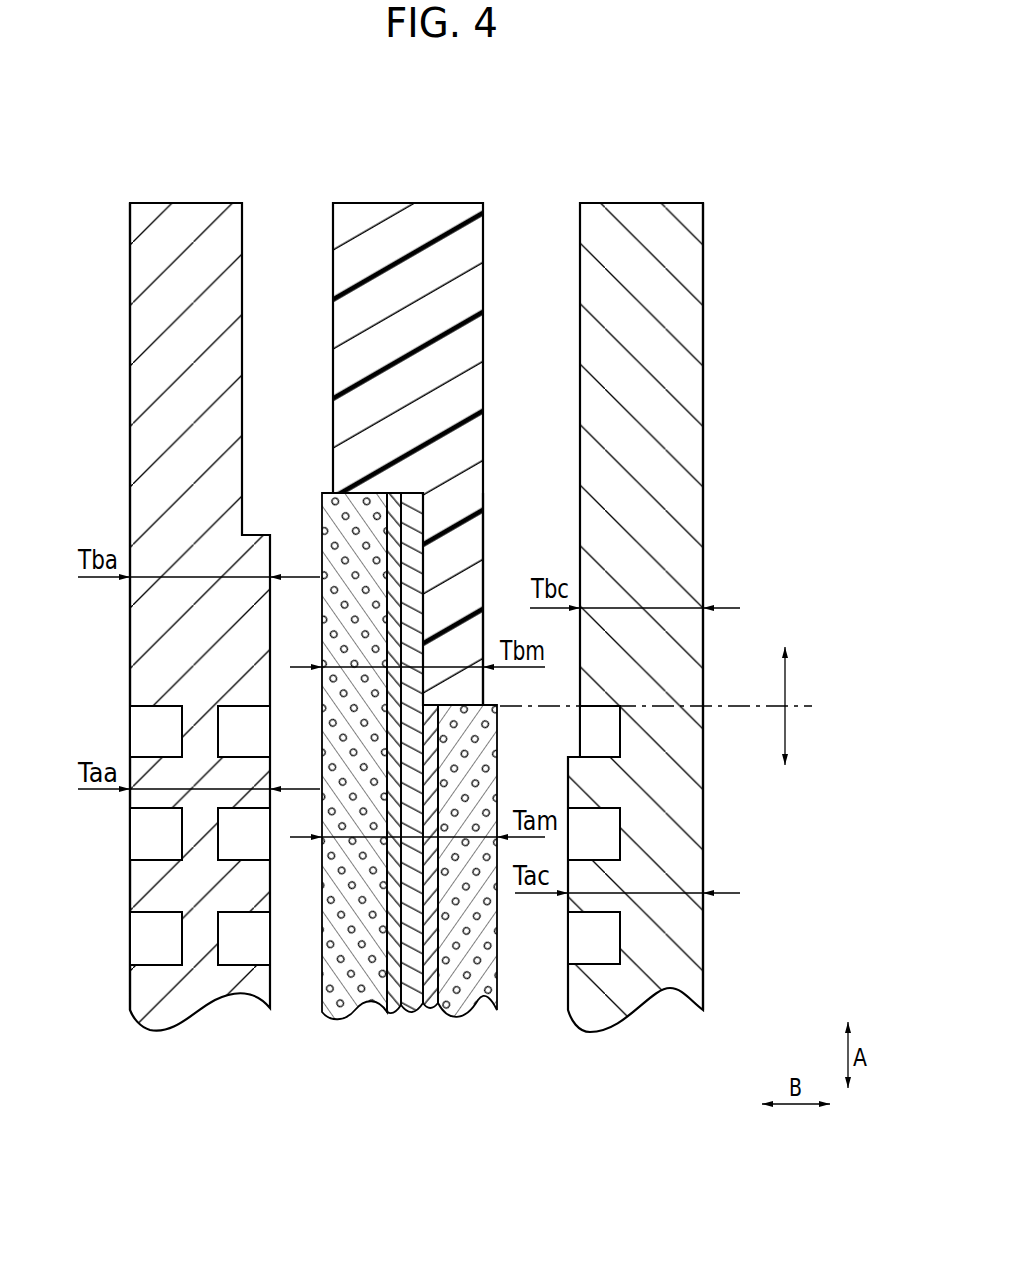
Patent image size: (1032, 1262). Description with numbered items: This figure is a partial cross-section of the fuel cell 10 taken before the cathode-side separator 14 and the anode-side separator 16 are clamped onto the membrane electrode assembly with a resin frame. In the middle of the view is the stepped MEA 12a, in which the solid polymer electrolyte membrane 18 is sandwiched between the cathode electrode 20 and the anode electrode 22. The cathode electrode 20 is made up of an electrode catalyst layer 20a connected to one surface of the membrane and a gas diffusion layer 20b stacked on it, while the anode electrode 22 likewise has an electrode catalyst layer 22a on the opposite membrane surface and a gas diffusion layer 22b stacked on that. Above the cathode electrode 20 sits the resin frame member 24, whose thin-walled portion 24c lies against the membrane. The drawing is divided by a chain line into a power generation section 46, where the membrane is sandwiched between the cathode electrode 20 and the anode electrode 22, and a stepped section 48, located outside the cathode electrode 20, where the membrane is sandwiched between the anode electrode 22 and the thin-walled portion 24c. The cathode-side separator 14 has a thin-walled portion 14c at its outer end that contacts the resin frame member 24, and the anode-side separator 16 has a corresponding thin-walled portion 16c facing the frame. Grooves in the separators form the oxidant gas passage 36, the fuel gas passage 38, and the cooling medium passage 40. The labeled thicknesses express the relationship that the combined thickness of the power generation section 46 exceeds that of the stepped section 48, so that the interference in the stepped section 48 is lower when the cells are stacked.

The fuel cell 10 is at (200, 112).
The stepped MEA 12a is at (338, 970).
The cathode-side separator 14 is at (638, 201).
The thin-walled portion 14c is at (680, 312).
The anode-side separator 16 is at (153, 201).
The thin-walled portion 16c is at (138, 281).
The solid polymer electrolyte membrane 18 is at (413, 1016).
The cathode electrode 20 is at (538, 1082).
The electrode catalyst layer 20a is at (431, 1013).
The gas diffusion layer 20b is at (471, 996).
The anode electrode 22 is at (402, 1082).
The electrode catalyst layer 22a is at (394, 1013).
The gas diffusion layer 22b is at (336, 1012).
The resin frame member 24 is at (426, 201).
The thin-walled portion 24c is at (470, 555).
The oxidant gas passage 36 is at (605, 938).
The fuel gas passage 38 is at (245, 840).
The cooling medium passage 40 is at (140, 938).
The power generation section 46 is at (837, 780).
The stepped section 48 is at (827, 644).